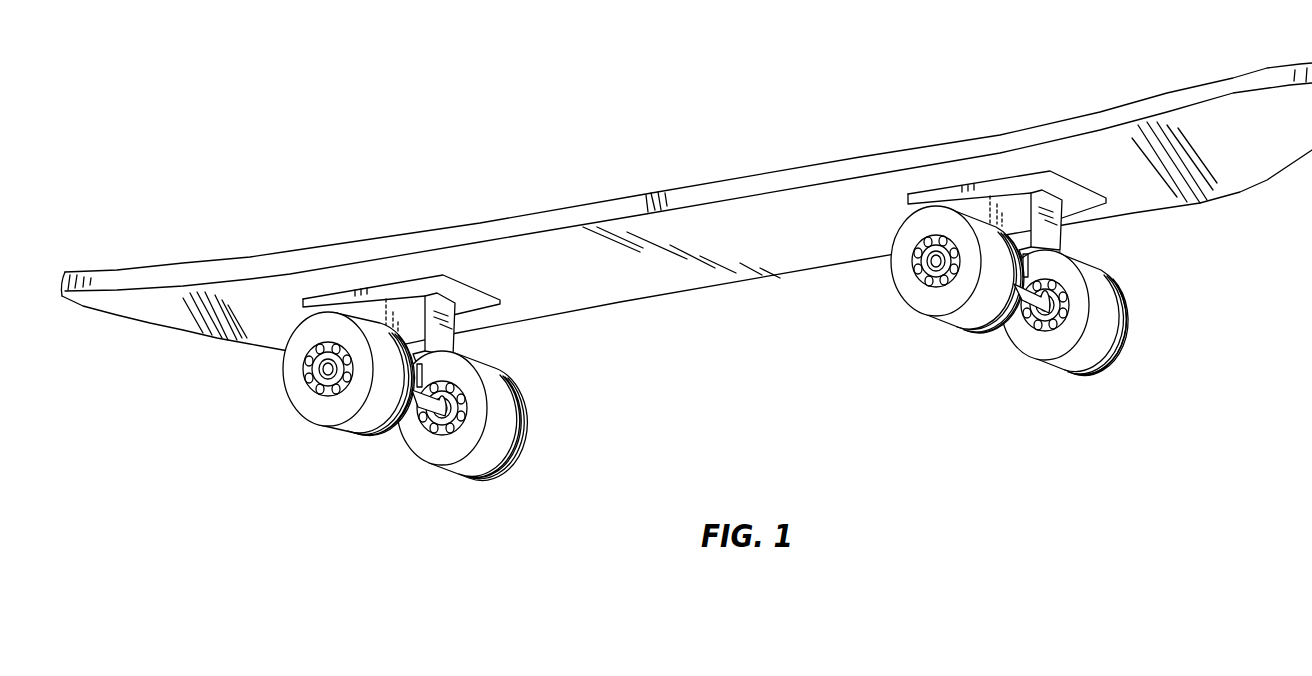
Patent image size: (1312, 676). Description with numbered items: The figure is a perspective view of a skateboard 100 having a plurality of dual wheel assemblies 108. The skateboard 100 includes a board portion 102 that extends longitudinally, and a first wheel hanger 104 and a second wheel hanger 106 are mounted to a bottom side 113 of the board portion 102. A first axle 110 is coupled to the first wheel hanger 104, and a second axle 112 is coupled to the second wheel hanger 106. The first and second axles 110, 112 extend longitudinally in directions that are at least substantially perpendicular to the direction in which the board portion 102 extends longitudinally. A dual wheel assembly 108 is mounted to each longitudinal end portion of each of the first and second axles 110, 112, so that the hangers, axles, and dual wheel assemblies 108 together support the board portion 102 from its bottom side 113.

The skateboard 100 is at (477, 190).
The board portion 102 is at (757, 222).
The first wheel hanger 104 is at (1014, 213).
The second wheel hanger 106 is at (410, 316).
The dual wheel assembly 108 is at (302, 398).
The first axle 110 is at (1034, 300).
The second axle 112 is at (423, 411).
The bottom side 113 is at (572, 256).